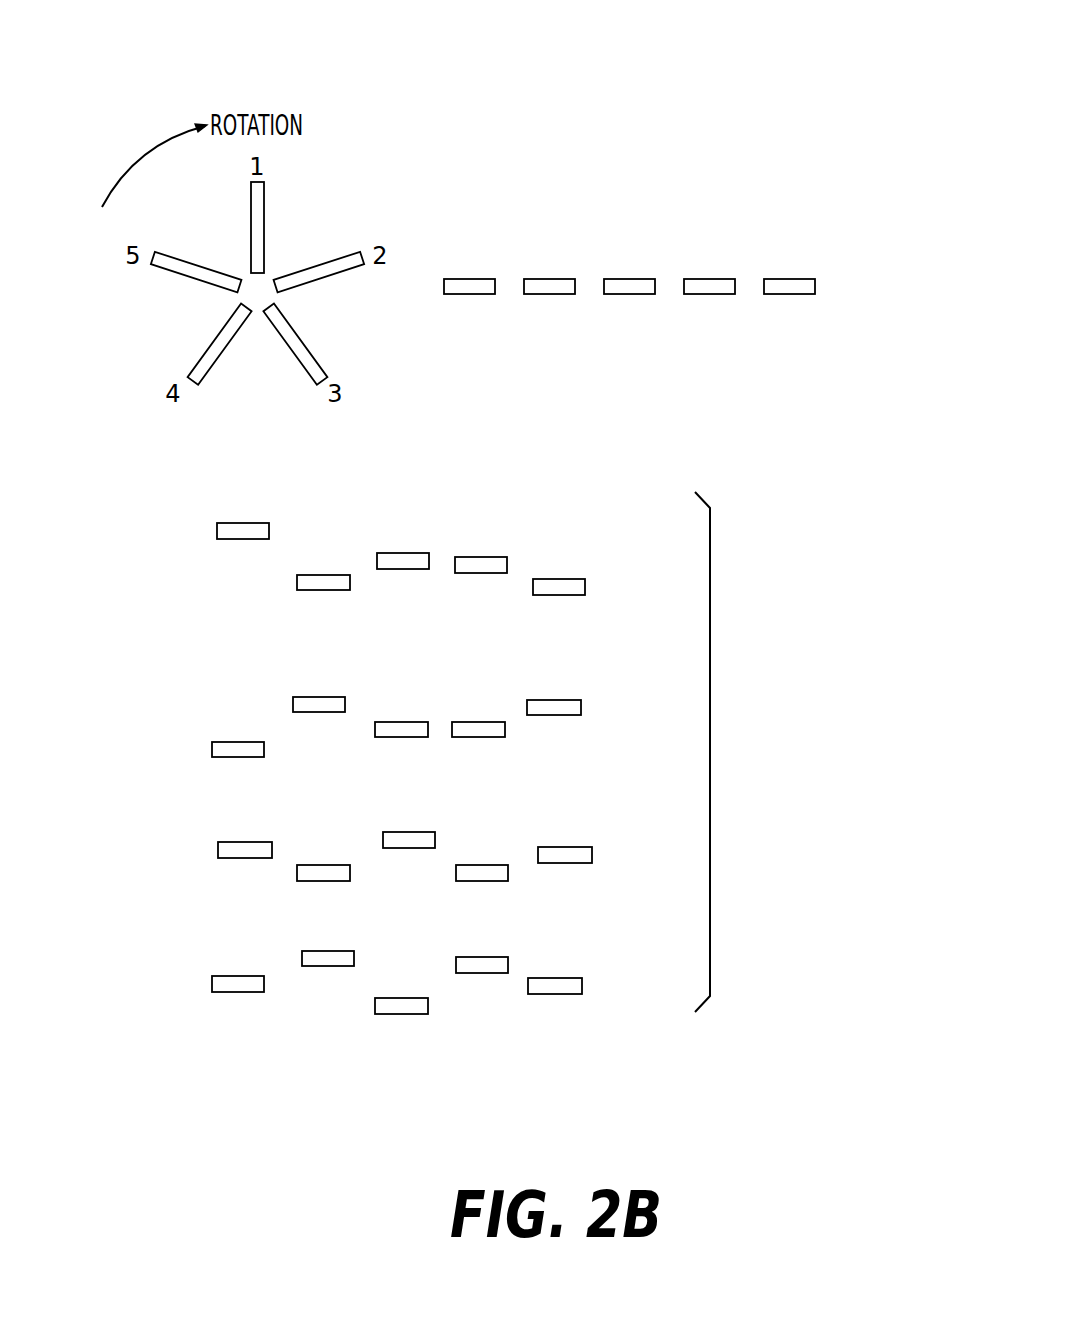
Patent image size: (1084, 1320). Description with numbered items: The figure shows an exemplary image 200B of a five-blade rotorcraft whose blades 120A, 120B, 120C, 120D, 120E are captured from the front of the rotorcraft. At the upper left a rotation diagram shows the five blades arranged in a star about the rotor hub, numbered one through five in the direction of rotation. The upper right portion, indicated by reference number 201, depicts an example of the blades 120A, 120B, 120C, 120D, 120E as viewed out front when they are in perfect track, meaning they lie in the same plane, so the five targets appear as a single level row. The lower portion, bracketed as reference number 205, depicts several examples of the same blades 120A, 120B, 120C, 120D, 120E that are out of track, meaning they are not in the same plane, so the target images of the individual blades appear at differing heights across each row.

The exemplary image 200B is at (840, 26).
The example of blades in perfect track 201 is at (846, 232).
The blade 120A is at (495, 288).
The blade 120B is at (575, 288).
The blade 120C is at (655, 288).
The blade 120D is at (735, 288).
The blade 120E is at (815, 288).
The examples of blades out of track 205 is at (711, 763).